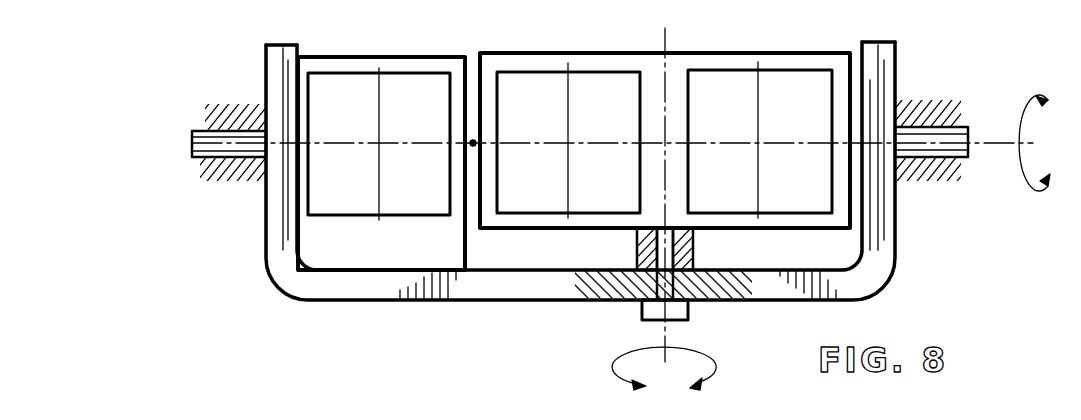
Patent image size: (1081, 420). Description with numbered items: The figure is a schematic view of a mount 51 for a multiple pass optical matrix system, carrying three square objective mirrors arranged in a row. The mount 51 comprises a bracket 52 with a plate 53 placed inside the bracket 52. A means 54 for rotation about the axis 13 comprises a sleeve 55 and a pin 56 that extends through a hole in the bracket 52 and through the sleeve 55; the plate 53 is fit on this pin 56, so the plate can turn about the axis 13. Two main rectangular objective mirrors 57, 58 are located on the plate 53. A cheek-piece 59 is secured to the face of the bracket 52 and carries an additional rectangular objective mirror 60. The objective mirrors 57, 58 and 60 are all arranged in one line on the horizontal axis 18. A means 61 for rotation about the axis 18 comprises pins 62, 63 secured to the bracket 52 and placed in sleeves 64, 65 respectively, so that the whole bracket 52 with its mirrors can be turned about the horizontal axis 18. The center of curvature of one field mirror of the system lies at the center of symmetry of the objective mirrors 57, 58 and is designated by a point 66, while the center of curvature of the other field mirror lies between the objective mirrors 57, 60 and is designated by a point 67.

The axis 13 is at (667, 330).
The horizontal axis 18 is at (192, 147).
The mount 51 is at (365, 305).
The bracket 52 is at (878, 64).
The plate 53 is at (680, 54).
The means for rotation about the axis 13 54 is at (634, 260).
The sleeve 55 is at (696, 247).
The pin 56 is at (642, 310).
The main rectangular objective mirror 57 is at (552, 80).
The main rectangular objective mirror 58 is at (796, 80).
The cheek-piece 59 is at (305, 58).
The additional rectangular objective mirror 60 is at (400, 80).
The means for rotation about the axis 18 61 is at (234, 95).
The pin 62 is at (200, 162).
The pin 63 is at (968, 152).
The sleeve 64 is at (225, 114).
The sleeve 65 is at (936, 168).
The point 66 is at (668, 145).
The point 67 is at (478, 143).